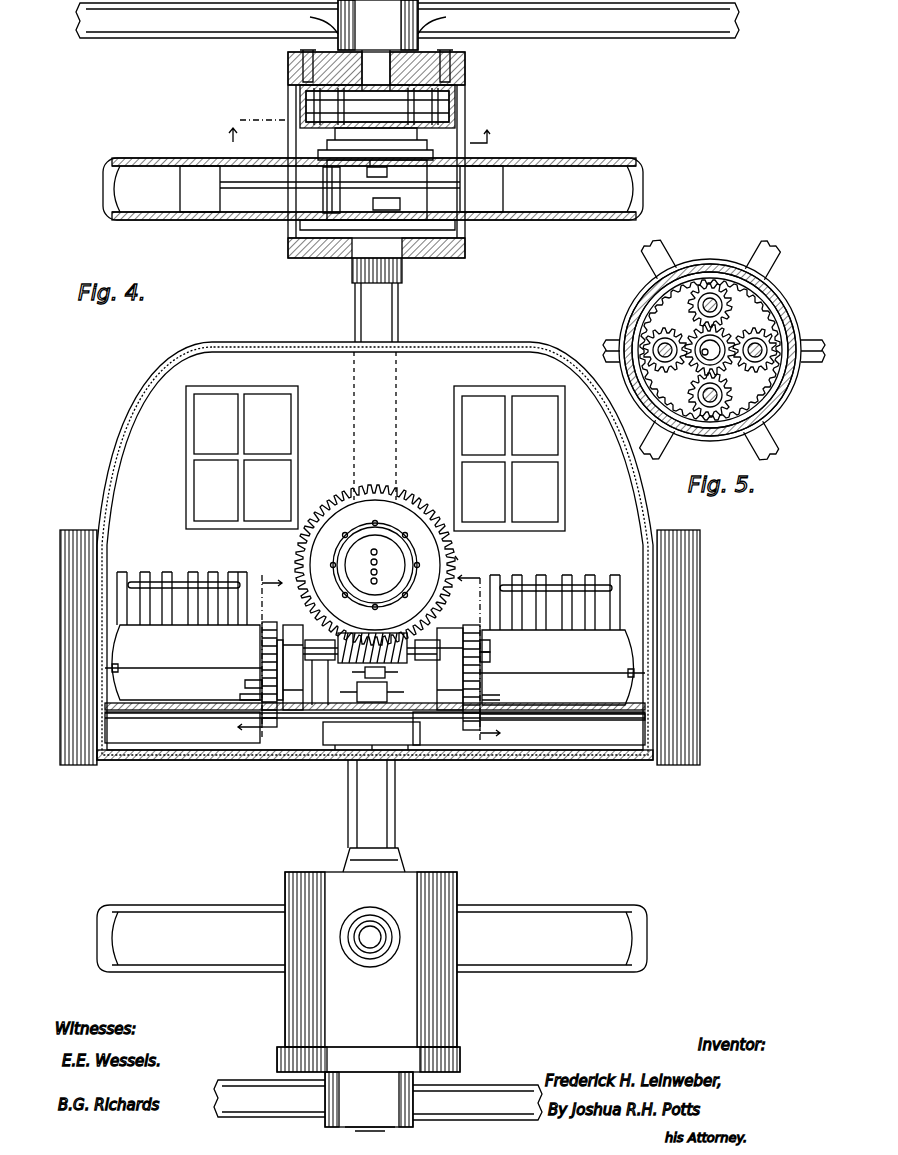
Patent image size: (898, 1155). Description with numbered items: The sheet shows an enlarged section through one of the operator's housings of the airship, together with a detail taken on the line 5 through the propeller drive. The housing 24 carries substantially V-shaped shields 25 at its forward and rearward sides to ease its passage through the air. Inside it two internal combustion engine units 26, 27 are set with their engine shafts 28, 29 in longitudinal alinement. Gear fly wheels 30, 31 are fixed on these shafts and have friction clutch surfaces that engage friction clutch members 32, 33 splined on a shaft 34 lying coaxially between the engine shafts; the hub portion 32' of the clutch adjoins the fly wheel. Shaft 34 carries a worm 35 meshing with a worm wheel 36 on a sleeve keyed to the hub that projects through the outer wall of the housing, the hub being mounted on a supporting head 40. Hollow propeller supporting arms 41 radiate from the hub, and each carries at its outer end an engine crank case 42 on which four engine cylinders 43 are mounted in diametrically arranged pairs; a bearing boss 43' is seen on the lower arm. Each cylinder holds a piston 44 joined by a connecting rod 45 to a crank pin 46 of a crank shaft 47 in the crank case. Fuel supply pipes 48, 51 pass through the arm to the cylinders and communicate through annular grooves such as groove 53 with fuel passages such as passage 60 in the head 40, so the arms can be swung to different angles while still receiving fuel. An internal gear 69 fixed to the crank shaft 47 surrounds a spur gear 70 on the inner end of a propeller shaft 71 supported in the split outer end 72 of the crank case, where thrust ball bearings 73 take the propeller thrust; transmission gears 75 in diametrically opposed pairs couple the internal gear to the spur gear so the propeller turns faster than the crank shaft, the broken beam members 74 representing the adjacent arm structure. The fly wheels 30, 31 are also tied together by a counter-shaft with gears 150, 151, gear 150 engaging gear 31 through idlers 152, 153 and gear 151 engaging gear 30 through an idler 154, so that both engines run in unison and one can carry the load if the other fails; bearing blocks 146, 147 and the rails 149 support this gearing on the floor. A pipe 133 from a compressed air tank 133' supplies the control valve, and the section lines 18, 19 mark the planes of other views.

In FIG. 4, the section line 5- 5 is at (354, 128).
In FIG. 4, the section line 18- 18 is at (479, 661).
In FIG. 4, the section line 19- 19 is at (260, 654).
In FIG. 4, the operator's housing 24 is at (272, 352).
In FIG. 4, the V-shaped shield 25 is at (73, 540).
In FIG. 4, the internal combustion engine unit 26 is at (562, 640).
In FIG. 4, the internal combustion engine unit 27 is at (183, 636).
In FIG. 4, the engine shaft 28 is at (483, 660).
In FIG. 4, the engine shaft 29 is at (262, 655).
In FIG. 4, the gear fly wheel 30 is at (482, 648).
In FIG. 4, the gear fly wheel 31 is at (262, 645).
In FIG. 4, the friction clutch member 32 is at (467, 669).
In FIG. 4, the gear hub 32' is at (453, 652).
In FIG. 4, the friction clutch member 33 is at (272, 623).
In FIG. 4, the shaft 34 is at (320, 672).
In FIG. 4, the worm 35 is at (378, 633).
In FIG. 4, the worm wheel 36 is at (455, 558).
In FIG. 4, the supporting head 40 is at (386, 542).
In FIG. 4, the propeller supporting arm 41 is at (398, 305).
In FIG. 4, the engine crank case 42 is at (465, 146).
In FIG. 5, the engine crank case 42 is at (640, 308).
In FIG. 4, the internal combustion engine cylinder 43 is at (372, 556).
In FIG. 4, the arm bearing 43' is at (370, 927).
In FIG. 4, the piston 44 is at (212, 200).
In FIG. 4, the connecting rod 45 is at (276, 186).
In FIG. 4, the crank pin 46 is at (323, 200).
In FIG. 4, the crank shaft 47 is at (387, 174).
In FIG. 4, the fuel supply pipe 48 is at (377, 562).
In FIG. 4, the fuel supply pipe 51 is at (377, 552).
In FIG. 4, the annular fuel groove 53 is at (377, 572).
In FIG. 4, the fuel passage 60 is at (377, 581).
In FIG. 4, the internal gear 69 is at (452, 110).
In FIG. 5, the internal gear 69 is at (665, 385).
In FIG. 4, the spur gear 70 is at (458, 98).
In FIG. 5, the spur gear 70 is at (730, 365).
In FIG. 4, the propeller shaft 71 is at (397, 1133).
In FIG. 5, the propeller shaft 71 is at (704, 356).
In FIG. 4, the outer end of crank case 72 is at (462, 65).
In FIG. 4, the thrust ball bearing 73 is at (290, 79).
In FIG. 4, the beam 74 is at (407, 561).
In FIG. 5, the beam 74 is at (608, 340).
In FIG. 4, the transmission gear 75 is at (296, 108).
In FIG. 5, the transmission gear 75 is at (722, 304).
In FIG. 4, the pipe 133 is at (529, 728).
In FIG. 4, the compressed air tank 133' is at (371, 736).
In FIG. 4, the bearing 146 is at (375, 672).
In FIG. 4, the bearing block 147 is at (372, 692).
In FIG. 4, the rail 149 is at (375, 716).
In FIG. 4, the gear 150 is at (300, 730).
In FIG. 4, the gear 151 is at (480, 717).
In FIG. 4, the idler 152 is at (262, 683).
In FIG. 4, the idler 153 is at (268, 698).
In FIG. 4, the idler 154 is at (484, 692).